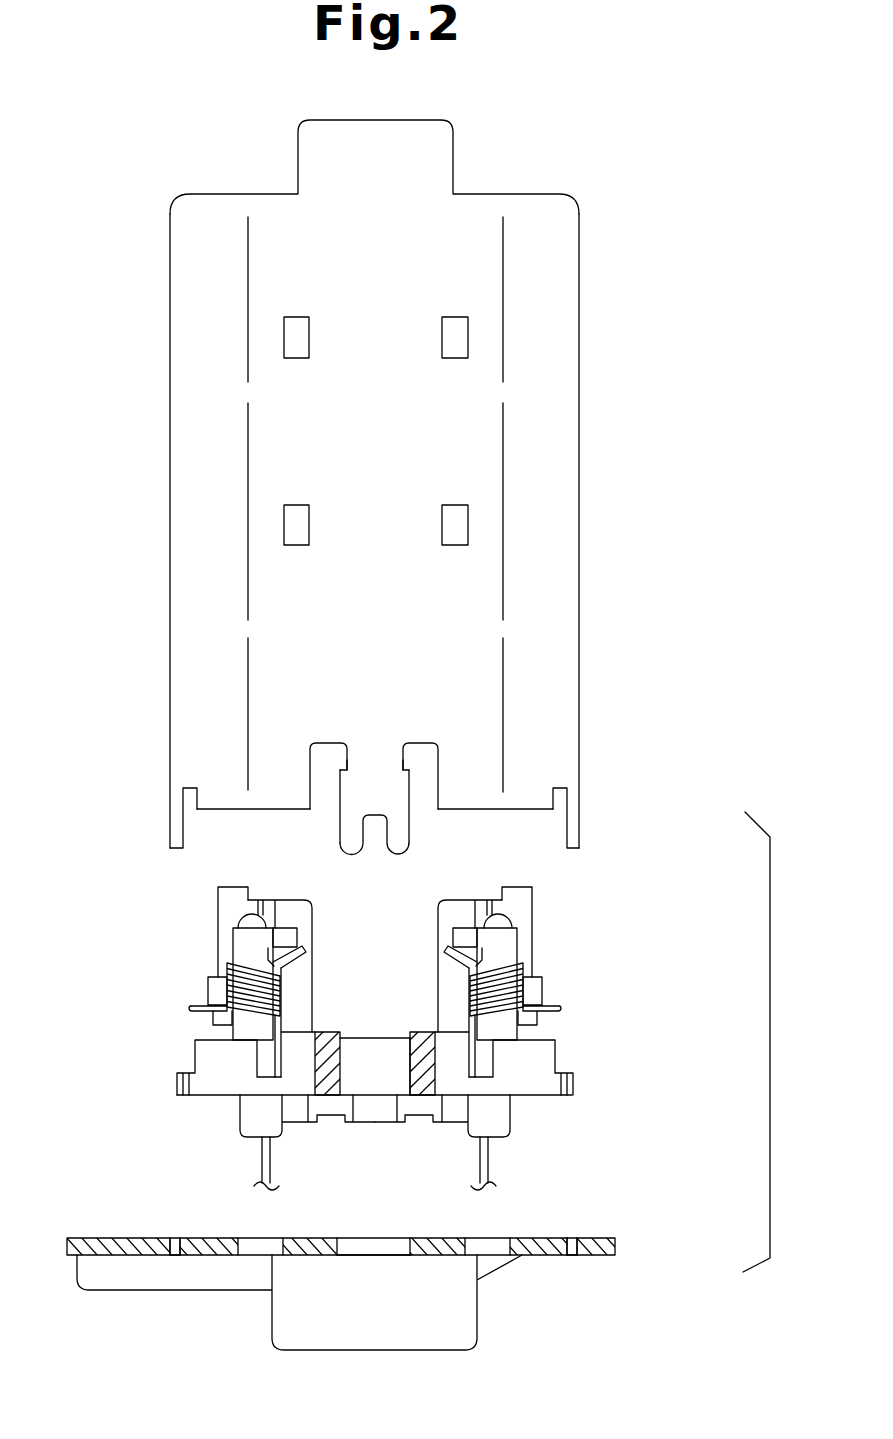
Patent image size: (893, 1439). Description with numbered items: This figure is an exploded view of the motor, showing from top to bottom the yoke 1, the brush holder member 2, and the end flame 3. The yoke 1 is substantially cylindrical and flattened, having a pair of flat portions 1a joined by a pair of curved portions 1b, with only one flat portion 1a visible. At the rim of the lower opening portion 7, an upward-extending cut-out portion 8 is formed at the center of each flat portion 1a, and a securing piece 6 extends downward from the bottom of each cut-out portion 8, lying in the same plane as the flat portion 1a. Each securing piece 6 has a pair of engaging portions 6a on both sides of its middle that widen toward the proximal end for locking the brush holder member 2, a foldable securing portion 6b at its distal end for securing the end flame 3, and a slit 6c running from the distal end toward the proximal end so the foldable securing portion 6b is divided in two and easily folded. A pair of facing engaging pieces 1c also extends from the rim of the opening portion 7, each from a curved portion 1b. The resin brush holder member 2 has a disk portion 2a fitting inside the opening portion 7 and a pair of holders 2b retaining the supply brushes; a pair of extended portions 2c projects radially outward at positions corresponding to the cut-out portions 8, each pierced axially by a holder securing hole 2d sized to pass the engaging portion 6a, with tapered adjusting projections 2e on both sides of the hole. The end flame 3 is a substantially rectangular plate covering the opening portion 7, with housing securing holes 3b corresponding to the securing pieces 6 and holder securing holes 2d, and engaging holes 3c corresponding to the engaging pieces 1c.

The yoke 1 is at (382, 513).
The flat portion 1a is at (460, 463).
The curved portion 1b is at (188, 593).
The engaging piece 1c is at (172, 828).
The brush holder member 2 is at (397, 1038).
The disk portion 2a is at (547, 1053).
The holder 2b is at (213, 985).
The extended portion 2c is at (436, 1083).
The holder securing hole 2d is at (408, 1078).
The adjusting projection 2e is at (327, 1032).
The end flame 3 is at (372, 1266).
The housing securing hole 3b is at (402, 1255).
The engaging hole 3c is at (177, 1247).
The securing piece 6 is at (390, 832).
The engaging portion 6a is at (412, 775).
The foldable securing portion 6b is at (396, 846).
The slit 6c is at (372, 832).
The opening portion 7 is at (252, 810).
The cut-out portion 8 is at (333, 748).